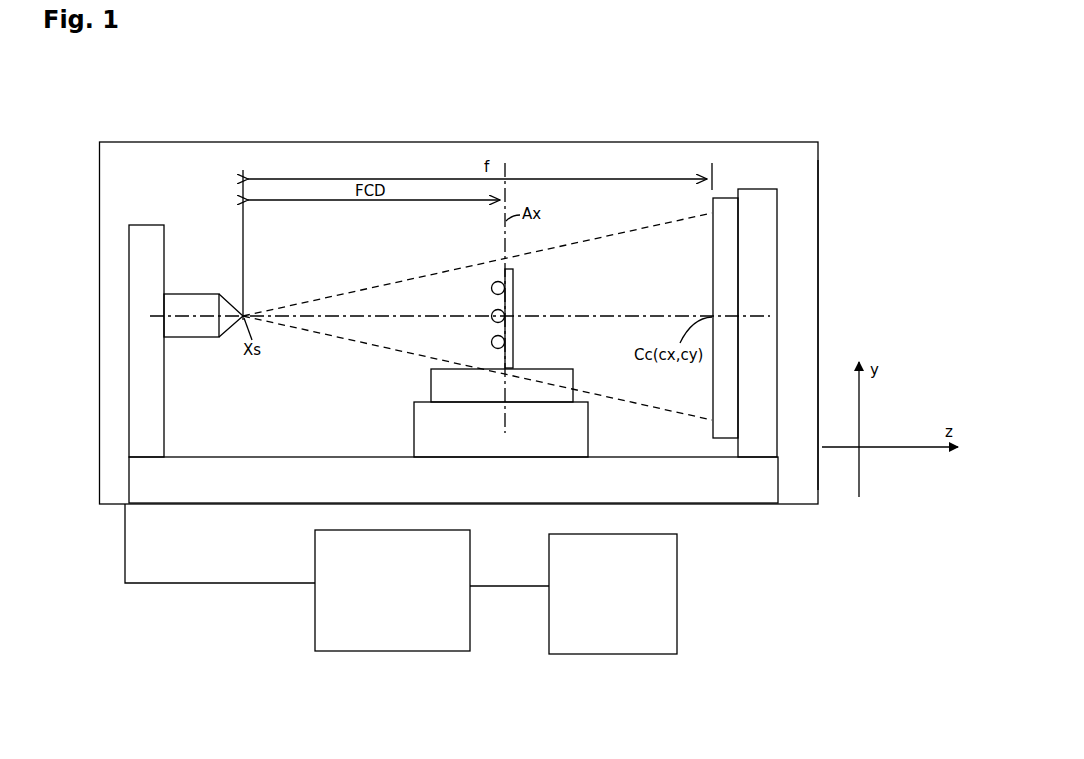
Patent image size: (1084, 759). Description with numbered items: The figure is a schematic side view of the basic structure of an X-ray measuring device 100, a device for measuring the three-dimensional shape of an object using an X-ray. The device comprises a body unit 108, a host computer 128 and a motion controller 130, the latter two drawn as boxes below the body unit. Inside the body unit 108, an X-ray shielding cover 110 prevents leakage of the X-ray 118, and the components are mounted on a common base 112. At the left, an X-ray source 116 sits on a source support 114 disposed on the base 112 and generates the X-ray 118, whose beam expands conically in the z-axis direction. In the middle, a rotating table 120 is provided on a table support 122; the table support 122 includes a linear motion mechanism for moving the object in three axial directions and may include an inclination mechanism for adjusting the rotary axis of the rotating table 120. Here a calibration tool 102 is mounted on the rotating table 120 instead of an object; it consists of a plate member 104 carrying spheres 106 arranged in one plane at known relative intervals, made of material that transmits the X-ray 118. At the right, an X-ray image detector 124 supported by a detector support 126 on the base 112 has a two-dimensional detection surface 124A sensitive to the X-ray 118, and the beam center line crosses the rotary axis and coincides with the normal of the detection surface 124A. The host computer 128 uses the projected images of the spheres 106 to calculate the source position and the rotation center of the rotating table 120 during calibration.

The X-ray measuring device 100 is at (540, 139).
The calibration tool 102 is at (499, 304).
The plate member 104 is at (511, 309).
The spheres 106 is at (492, 283).
The body unit 108 is at (831, 154).
The X-ray shielding cover 110 is at (819, 224).
The base 112 is at (453, 480).
The source support 114 is at (146, 341).
The X-ray source 116 is at (181, 332).
The X-ray 118 is at (364, 287).
The rotating table 120 is at (433, 386).
The table support 122 is at (501, 429).
The X-ray image detector 124 is at (720, 427).
The detection surface 124A is at (712, 390).
The detector support 126 is at (757, 323).
The host computer 128 is at (297, 577).
The motion controller 130 is at (573, 594).